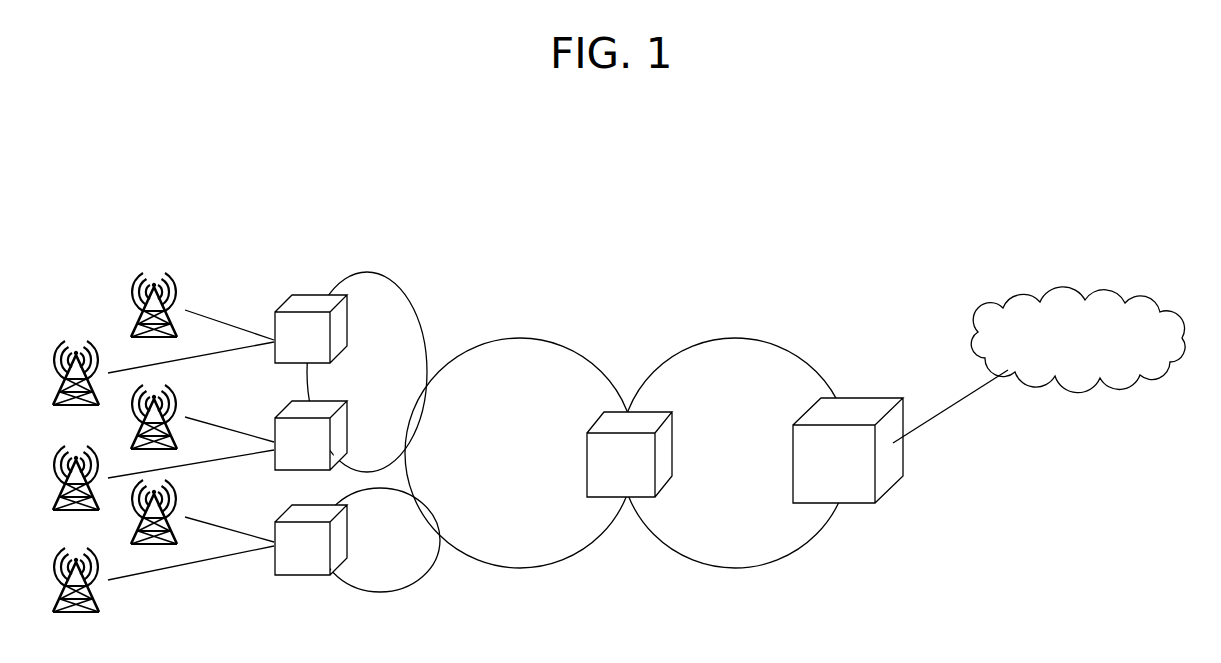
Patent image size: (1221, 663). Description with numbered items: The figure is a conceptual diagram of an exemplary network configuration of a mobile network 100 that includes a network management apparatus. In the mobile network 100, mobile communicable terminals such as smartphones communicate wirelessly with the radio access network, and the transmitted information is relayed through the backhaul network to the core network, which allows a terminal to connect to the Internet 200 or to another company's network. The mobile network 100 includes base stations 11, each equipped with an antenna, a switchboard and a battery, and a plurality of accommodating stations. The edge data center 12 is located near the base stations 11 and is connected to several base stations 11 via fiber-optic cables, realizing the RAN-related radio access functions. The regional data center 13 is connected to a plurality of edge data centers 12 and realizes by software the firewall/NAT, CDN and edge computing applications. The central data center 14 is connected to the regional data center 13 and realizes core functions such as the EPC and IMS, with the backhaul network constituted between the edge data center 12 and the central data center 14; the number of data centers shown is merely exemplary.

The base station 11 is at (135, 322).
The edge data center 12 is at (305, 295).
The regional data center 13 is at (627, 412).
The central data center 14 is at (857, 398).
The mobile network 100 is at (760, 270).
The Internet 200 is at (1143, 300).